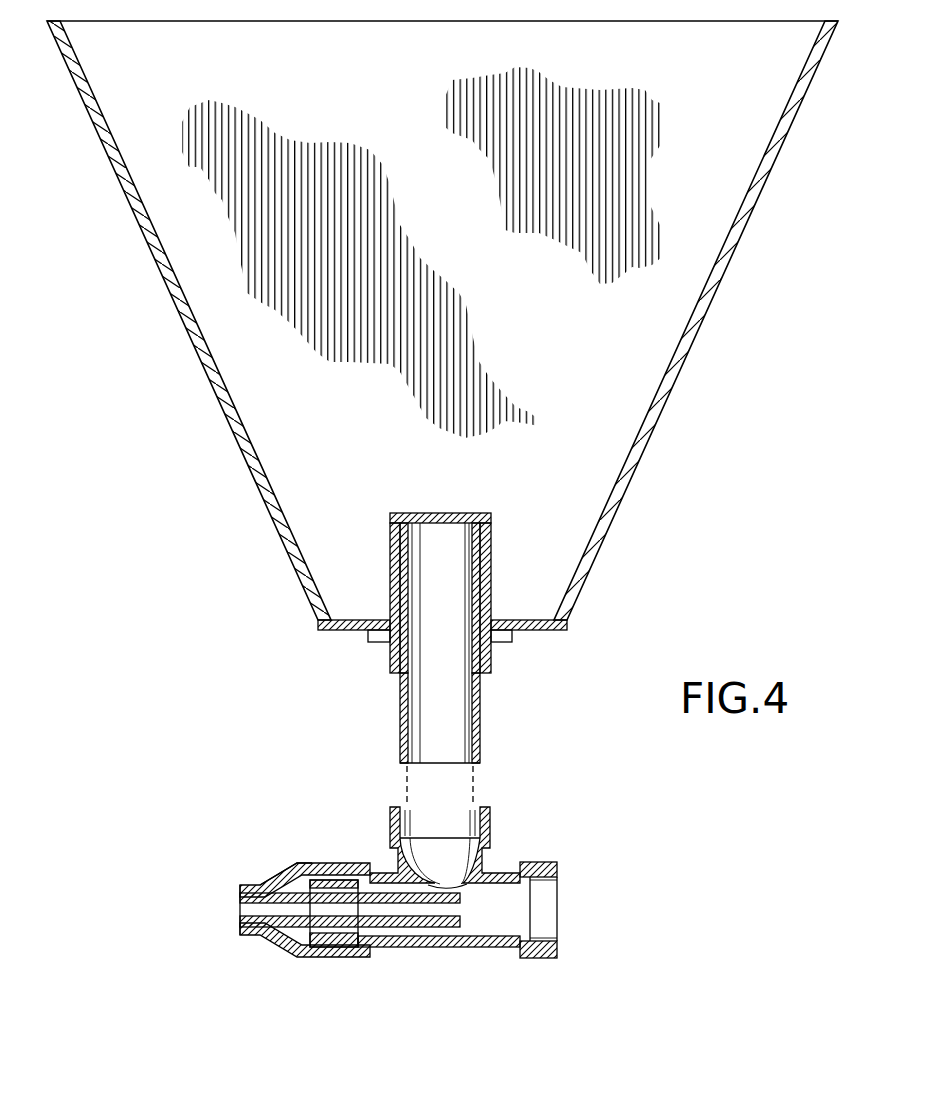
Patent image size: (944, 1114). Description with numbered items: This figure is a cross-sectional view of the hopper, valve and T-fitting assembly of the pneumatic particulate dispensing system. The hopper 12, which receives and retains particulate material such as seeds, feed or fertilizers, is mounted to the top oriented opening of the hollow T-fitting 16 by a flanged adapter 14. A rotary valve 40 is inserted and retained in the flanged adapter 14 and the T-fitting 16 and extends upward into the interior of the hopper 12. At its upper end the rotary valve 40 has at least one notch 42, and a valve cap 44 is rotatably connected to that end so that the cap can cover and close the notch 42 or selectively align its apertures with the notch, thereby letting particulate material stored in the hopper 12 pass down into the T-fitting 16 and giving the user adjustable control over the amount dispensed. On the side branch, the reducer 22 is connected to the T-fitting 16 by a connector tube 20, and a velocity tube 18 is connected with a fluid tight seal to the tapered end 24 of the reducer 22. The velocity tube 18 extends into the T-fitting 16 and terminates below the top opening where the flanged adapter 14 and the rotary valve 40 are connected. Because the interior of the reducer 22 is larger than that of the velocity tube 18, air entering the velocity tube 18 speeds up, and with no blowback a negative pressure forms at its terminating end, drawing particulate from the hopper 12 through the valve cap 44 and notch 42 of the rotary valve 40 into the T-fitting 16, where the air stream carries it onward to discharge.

The hopper 12 is at (203, 372).
The flanged adapter 14 is at (400, 653).
The T-fitting 16 is at (480, 947).
The velocity tube 18 is at (242, 917).
The connector tube 20 is at (343, 940).
The reducer 22 is at (292, 861).
The tapered end 24 is at (243, 885).
The rotary valve 40 is at (482, 725).
The notch 42 is at (408, 583).
The valve cap 44 is at (480, 540).